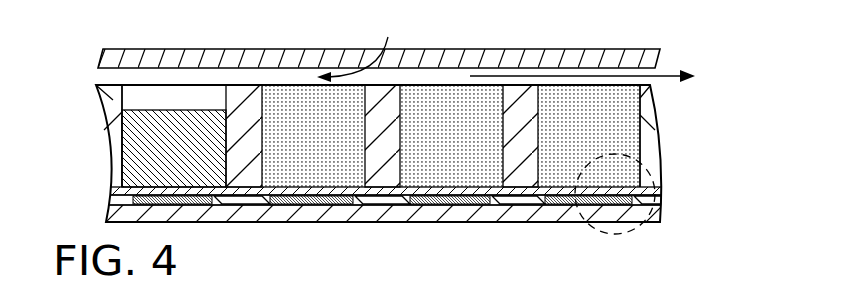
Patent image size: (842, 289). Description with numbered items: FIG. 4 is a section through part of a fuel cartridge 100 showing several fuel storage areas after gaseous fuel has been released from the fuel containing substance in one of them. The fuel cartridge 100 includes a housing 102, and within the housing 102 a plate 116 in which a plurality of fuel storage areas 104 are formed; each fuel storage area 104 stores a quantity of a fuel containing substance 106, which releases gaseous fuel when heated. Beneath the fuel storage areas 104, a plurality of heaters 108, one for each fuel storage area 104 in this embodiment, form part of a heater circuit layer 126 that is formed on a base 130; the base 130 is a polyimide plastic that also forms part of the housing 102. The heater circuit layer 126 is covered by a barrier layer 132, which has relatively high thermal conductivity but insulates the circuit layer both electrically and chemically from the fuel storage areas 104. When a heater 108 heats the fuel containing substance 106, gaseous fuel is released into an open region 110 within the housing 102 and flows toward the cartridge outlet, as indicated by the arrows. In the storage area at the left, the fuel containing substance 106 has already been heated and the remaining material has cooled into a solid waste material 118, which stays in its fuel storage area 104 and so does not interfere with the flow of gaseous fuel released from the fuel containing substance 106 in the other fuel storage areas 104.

The fuel cartridge 100 is at (147, 44).
The housing 102 is at (505, 48).
The fuel storage areas 104 is at (108, 173).
The fuel containing substance 106 is at (628, 140).
The heaters 108 is at (420, 205).
The open region 110 is at (363, 44).
The plate 116 is at (248, 105).
The solid waste material 118 is at (152, 136).
The heater circuit layer 126 is at (656, 205).
The base 130 is at (213, 216).
The barrier layer 132 is at (652, 186).